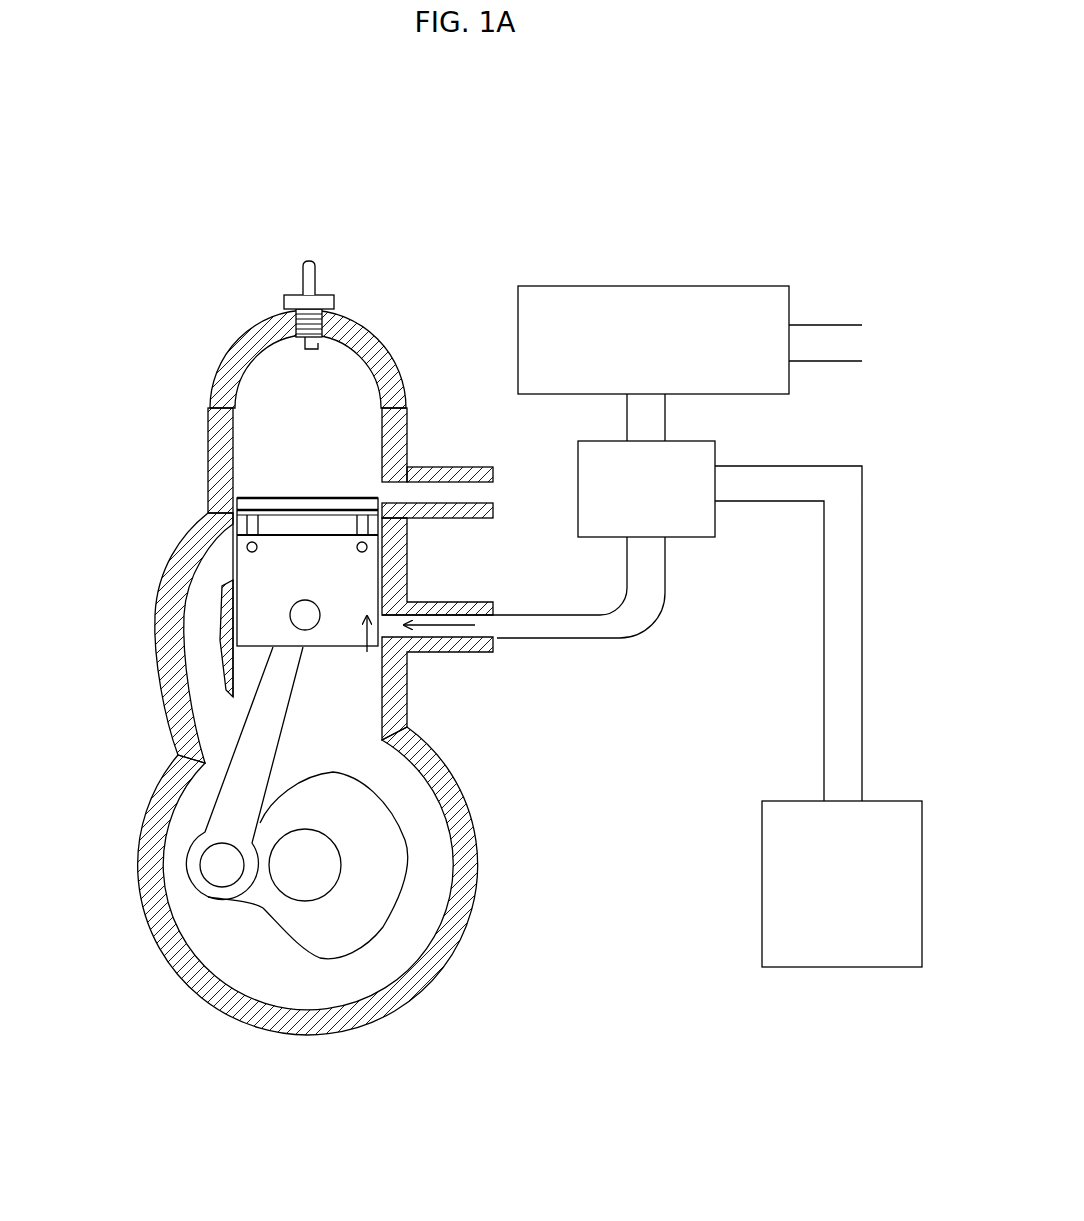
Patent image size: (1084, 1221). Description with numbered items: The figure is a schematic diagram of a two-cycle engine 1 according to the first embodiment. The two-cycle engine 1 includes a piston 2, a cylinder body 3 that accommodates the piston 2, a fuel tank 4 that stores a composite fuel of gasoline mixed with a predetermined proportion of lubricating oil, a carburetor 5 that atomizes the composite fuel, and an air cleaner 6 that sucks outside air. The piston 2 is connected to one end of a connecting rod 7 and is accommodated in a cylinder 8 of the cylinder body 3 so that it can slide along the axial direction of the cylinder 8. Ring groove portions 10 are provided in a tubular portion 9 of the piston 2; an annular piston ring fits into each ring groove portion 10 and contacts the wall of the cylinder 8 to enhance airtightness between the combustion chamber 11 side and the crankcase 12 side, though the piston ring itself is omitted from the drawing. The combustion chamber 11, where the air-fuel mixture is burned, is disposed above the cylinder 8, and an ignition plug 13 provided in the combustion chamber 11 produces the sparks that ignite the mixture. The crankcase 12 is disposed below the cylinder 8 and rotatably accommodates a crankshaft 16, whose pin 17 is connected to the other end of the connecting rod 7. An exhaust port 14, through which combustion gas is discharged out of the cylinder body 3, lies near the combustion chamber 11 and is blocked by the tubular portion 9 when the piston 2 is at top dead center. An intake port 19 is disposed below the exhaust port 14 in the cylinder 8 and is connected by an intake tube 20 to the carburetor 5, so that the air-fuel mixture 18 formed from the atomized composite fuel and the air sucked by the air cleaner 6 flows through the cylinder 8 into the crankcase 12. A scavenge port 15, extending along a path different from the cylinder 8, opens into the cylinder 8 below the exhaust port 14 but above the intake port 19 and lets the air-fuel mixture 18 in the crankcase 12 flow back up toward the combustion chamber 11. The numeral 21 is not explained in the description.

The two-cycle engine 1 is at (662, 210).
The piston 2 is at (383, 667).
The cylinder body 3 is at (223, 438).
The fuel tank 4 is at (819, 969).
The carburetor 5 is at (707, 457).
The air cleaner 6 is at (736, 301).
The connecting rod 7 is at (258, 737).
The cylinder 8 is at (230, 645).
The tubular portion 9 is at (410, 597).
The ring groove portions 10 is at (407, 518).
The combustion chamber 11 is at (385, 368).
The crankcase 12 is at (435, 958).
The ignition plug 13 is at (320, 318).
The exhaust port 14 is at (460, 495).
The scavenge port 15 is at (202, 597).
The crankshaft 16 is at (303, 865).
The pin 17 is at (217, 867).
The air-fuel mixture 18 is at (455, 630).
The intake port 19 is at (478, 633).
The intake tube 20 is at (565, 628).
The piston ring 21 is at (258, 551).